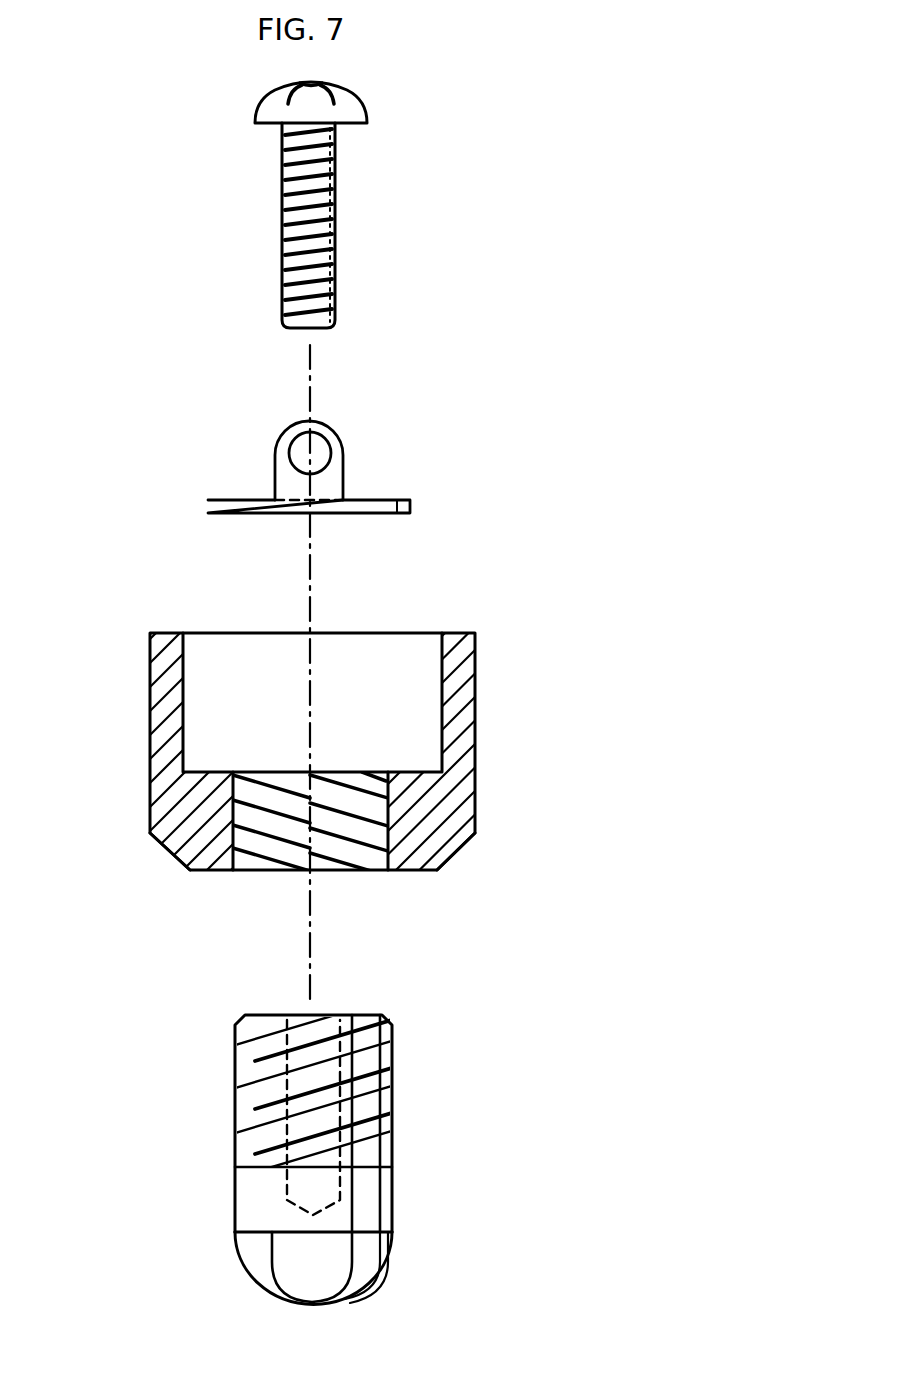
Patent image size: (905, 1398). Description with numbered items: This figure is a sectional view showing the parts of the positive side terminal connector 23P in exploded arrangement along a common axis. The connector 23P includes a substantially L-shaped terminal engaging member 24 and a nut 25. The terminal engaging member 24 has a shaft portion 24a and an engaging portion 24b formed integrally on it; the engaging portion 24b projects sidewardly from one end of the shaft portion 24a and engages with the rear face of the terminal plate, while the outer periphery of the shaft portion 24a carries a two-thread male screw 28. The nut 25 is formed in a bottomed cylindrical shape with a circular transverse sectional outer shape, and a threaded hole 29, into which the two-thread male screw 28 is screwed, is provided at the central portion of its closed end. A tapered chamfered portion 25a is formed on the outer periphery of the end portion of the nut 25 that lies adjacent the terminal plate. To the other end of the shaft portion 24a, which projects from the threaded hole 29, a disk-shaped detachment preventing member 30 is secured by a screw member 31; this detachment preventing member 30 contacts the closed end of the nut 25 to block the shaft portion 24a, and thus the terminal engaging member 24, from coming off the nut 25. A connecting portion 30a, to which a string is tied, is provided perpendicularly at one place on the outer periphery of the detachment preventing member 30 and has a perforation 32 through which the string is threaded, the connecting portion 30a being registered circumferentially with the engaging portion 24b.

The screw member 31 is at (282, 258).
The detachment preventing member 30 is at (276, 436).
The connecting portion 30a is at (308, 430).
The perforation 32 is at (290, 456).
The nut 25 is at (346, 750).
The tapered chamfered portion 25a is at (460, 845).
The threaded hole 29 is at (256, 869).
The positive side terminal connector 23P is at (294, 1175).
The two-thread male screw 28 is at (236, 1103).
The terminal engaging member 24 is at (215, 1253).
The shaft portion 24a is at (232, 1155).
The engaging portion 24b is at (307, 1286).